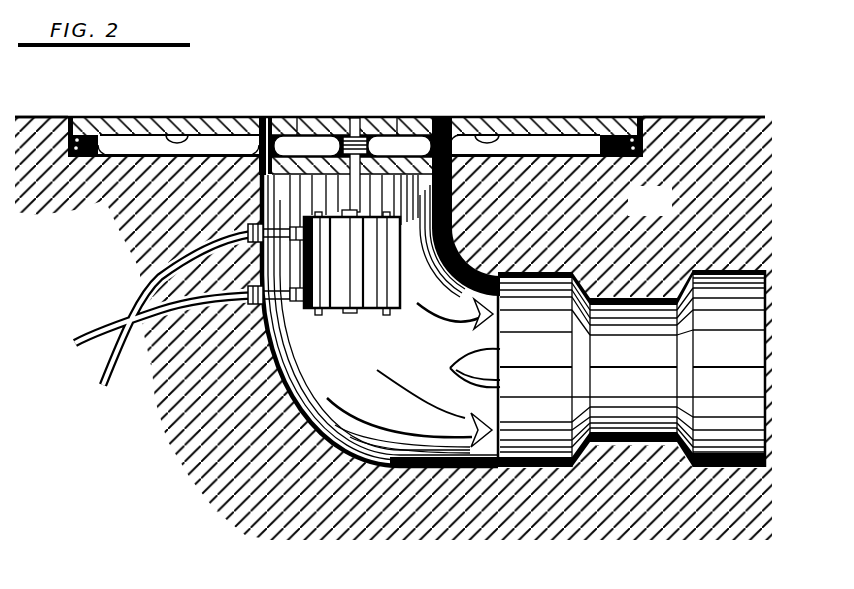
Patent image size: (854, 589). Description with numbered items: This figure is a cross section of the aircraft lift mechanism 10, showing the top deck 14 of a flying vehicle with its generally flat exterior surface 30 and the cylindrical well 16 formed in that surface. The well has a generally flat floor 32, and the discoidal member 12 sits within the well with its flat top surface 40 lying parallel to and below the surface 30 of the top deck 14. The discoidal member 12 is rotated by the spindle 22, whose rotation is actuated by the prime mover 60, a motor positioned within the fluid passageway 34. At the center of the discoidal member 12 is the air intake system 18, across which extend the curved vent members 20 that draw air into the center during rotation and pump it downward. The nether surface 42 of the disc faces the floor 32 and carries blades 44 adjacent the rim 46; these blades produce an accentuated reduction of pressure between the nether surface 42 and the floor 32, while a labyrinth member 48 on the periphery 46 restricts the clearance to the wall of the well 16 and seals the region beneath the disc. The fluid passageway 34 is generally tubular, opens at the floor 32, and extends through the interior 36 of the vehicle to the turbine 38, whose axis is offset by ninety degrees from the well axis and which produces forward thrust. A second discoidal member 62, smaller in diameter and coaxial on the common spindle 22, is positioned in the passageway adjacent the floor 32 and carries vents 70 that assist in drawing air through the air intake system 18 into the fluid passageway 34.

The aircraft lift mechanism 10 is at (683, 70).
The discoidal member 12 is at (532, 117).
The top deck 14 is at (38, 117).
The cylindrical well 16 is at (70, 117).
The air intake system 18 is at (377, 117).
The vent members 20 is at (294, 117).
The spindle 22 is at (350, 193).
The flat exterior surface 30 is at (700, 117).
The floor 32 is at (198, 154).
The fluid passageway 34 is at (408, 358).
The interior 36 is at (668, 212).
The turbine 38 is at (740, 356).
The flat top surface 40 is at (147, 117).
The nether surface 42 is at (171, 137).
The blades 44 is at (99, 156).
The rim 46 is at (80, 135).
The labyrinth member 48 is at (66, 145).
The prime mover 60 is at (367, 298).
The second discoidal member 62 is at (388, 160).
The vents 70 is at (358, 117).